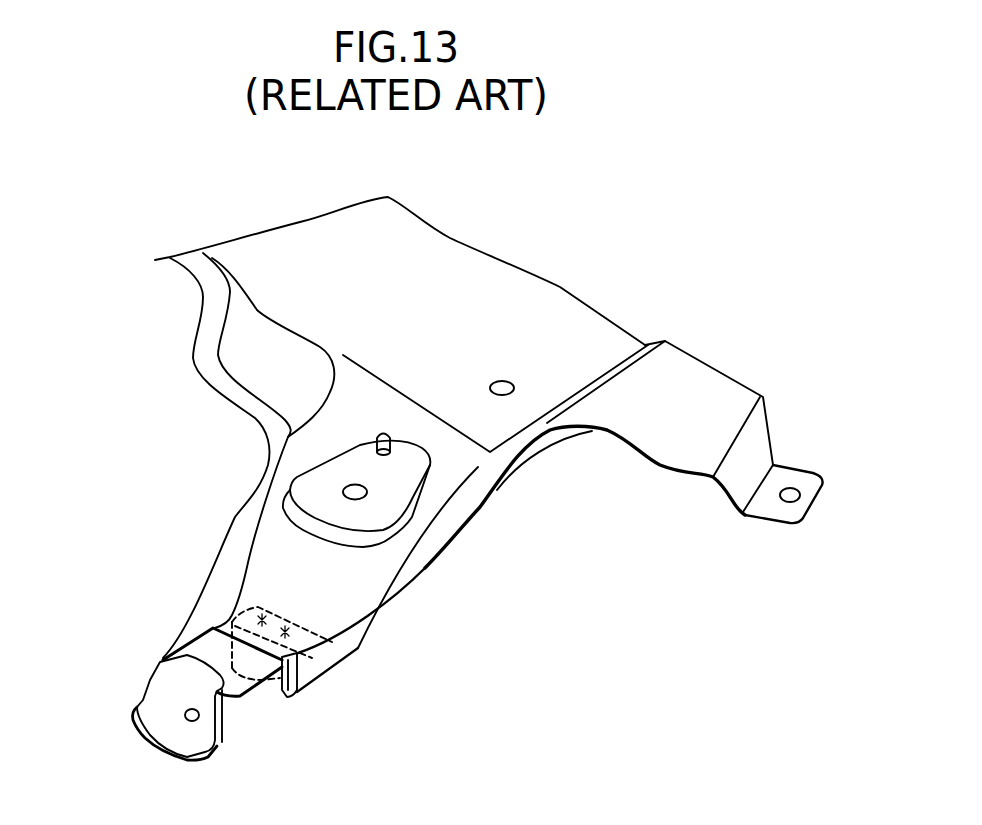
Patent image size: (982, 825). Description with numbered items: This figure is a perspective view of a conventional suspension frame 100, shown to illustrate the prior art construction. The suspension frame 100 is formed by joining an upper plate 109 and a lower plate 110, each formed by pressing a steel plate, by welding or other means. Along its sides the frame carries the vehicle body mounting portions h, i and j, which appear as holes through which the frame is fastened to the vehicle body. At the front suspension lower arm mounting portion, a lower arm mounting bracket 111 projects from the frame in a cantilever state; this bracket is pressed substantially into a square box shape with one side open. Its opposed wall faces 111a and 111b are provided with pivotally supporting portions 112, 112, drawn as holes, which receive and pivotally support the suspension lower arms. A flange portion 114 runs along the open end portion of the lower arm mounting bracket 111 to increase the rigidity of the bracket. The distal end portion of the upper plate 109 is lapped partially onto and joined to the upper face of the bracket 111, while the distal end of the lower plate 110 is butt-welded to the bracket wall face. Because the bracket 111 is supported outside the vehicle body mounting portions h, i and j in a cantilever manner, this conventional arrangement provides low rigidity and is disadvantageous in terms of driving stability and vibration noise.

The suspension frame 100 is at (557, 298).
The upper plate 109 is at (350, 577).
The lower plate 110 is at (358, 648).
The lower arm mounting bracket 111 is at (220, 745).
The wall face 111a is at (153, 695).
The wall face 111b is at (290, 697).
The pivotally supporting portion 112 is at (190, 721).
The flange portion 114 is at (157, 732).
The vehicle body mounting portion h is at (367, 493).
The vehicle body mounting portion i is at (503, 394).
The vehicle body mounting portion j is at (787, 502).